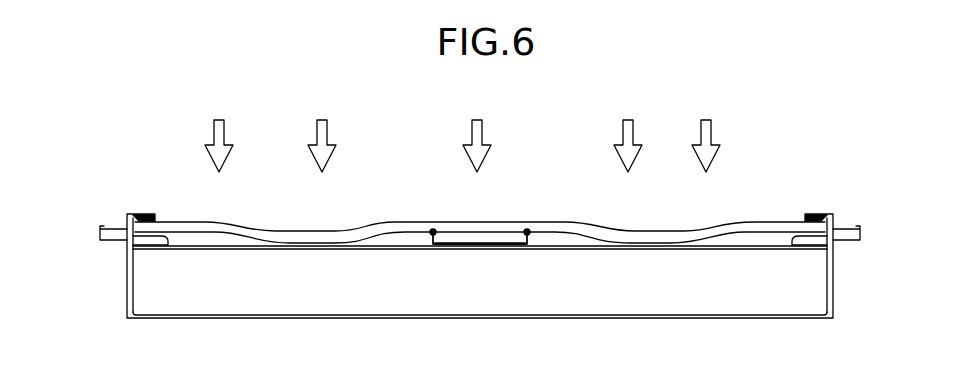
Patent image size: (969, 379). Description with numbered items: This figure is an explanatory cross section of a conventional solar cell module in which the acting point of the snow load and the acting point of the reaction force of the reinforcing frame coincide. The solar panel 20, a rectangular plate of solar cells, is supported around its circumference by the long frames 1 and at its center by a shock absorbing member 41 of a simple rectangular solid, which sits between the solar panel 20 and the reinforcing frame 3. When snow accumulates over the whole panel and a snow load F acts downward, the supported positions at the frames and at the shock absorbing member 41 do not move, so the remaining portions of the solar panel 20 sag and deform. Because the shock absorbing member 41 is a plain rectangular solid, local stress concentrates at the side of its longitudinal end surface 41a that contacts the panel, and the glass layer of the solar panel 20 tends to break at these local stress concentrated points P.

The long frame 1 is at (128, 297).
The reinforcing frame 3 is at (662, 305).
The solar panel 20 is at (397, 221).
The shock absorbing member 41 is at (488, 241).
The longitudinal end surface 41a is at (427, 240).
The local stress concentrated point P is at (433, 231).
The snow load F is at (462, 134).